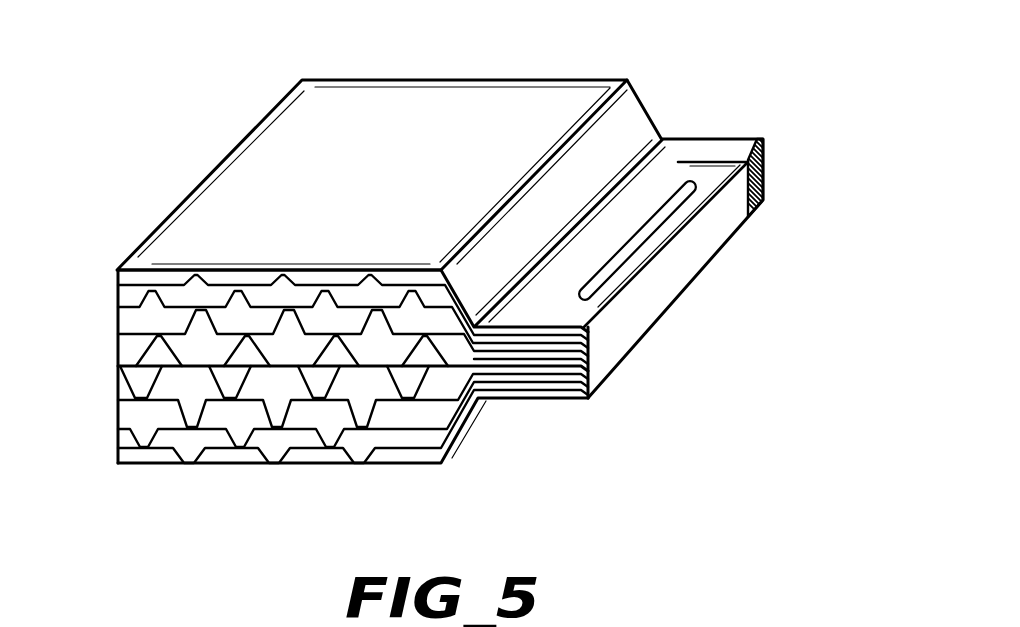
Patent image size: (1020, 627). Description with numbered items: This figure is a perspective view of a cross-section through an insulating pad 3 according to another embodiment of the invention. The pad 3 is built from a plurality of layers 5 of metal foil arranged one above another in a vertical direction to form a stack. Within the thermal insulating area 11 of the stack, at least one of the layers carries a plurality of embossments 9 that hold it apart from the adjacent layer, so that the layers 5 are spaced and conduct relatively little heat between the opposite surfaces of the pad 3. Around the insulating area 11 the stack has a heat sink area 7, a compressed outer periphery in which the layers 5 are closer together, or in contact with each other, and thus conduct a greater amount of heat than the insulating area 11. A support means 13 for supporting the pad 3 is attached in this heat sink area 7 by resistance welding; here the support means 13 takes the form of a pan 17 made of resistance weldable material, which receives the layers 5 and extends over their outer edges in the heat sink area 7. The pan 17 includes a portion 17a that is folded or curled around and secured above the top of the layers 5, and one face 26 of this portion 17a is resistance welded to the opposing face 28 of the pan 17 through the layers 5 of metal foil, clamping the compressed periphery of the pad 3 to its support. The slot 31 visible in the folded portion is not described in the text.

The insulating pad 3 is at (458, 70).
The layers 5 is at (110, 272).
The heat sink area 7 is at (771, 137).
The embossments 9 is at (192, 330).
The thermal insulating area 11 is at (322, 185).
The support means 13 is at (726, 254).
The pan 17 is at (457, 452).
The portion 17a is at (623, 323).
The face 26 is at (590, 366).
The opposing face 28 is at (563, 399).
The slot 31 is at (673, 204).